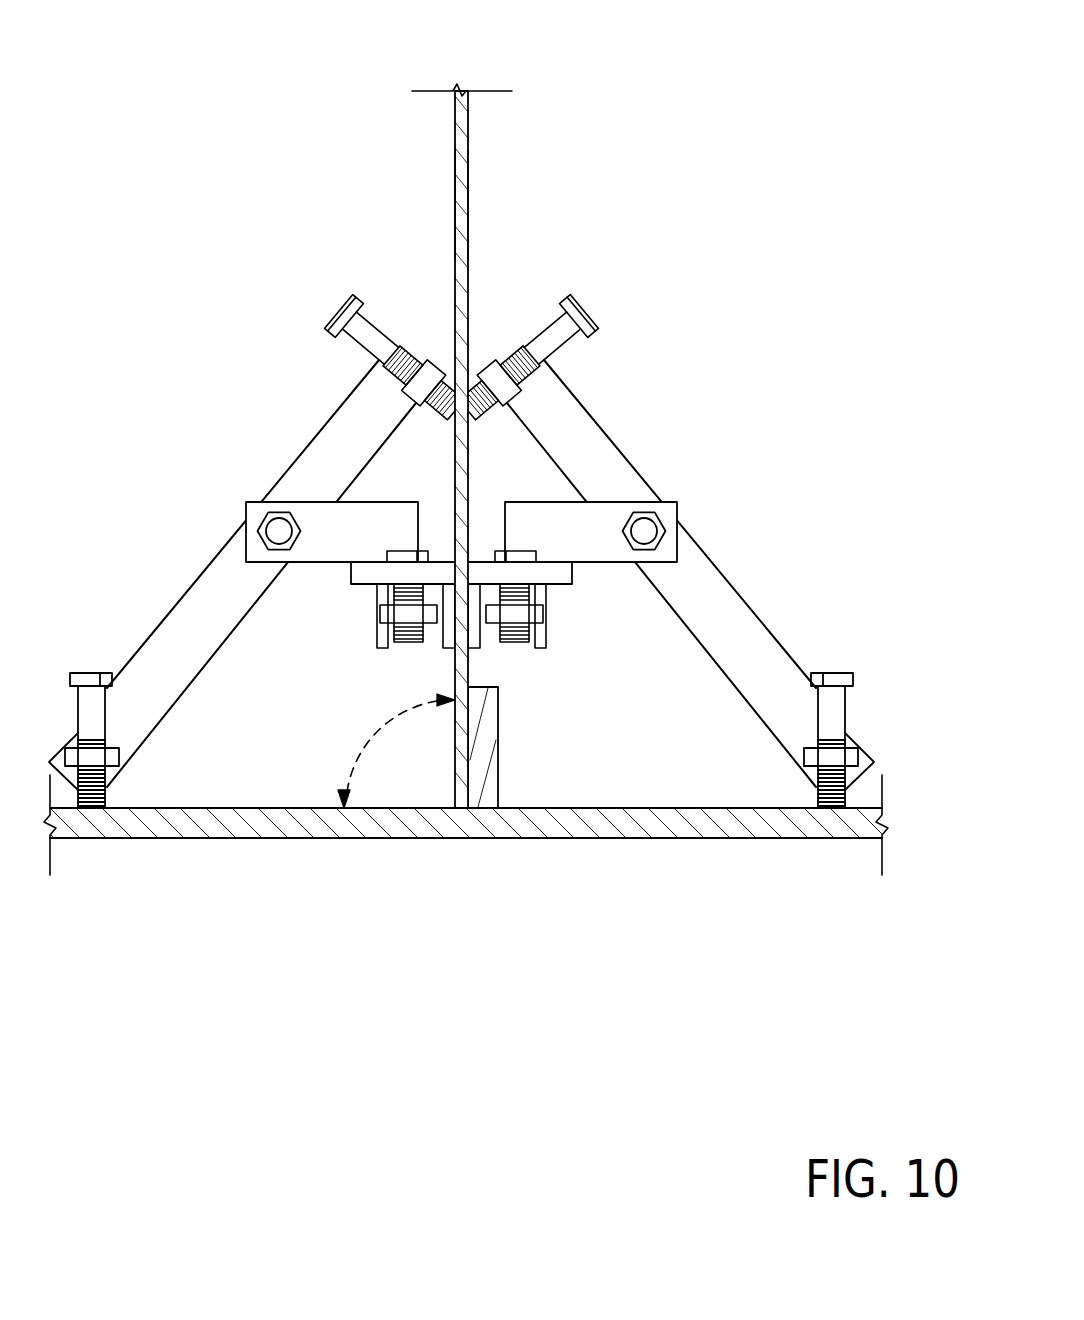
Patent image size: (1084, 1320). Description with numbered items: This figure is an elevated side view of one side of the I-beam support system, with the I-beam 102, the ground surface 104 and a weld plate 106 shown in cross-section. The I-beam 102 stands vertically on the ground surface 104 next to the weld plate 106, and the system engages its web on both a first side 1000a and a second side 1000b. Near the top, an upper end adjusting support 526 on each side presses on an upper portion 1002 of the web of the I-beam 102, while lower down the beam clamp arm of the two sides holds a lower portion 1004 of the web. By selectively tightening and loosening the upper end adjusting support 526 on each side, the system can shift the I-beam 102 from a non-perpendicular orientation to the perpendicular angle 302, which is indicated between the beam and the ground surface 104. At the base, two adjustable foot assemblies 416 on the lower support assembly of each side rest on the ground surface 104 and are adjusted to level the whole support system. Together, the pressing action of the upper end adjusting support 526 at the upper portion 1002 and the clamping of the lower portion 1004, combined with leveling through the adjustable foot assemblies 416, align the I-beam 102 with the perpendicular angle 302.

The I-beam 102 is at (469, 128).
The first side 1000a is at (469, 210).
The second side 1000b is at (455, 210).
The upper portion 1002 is at (456, 378).
The upper end adjusting support 526 is at (590, 314).
The lower portion 1004 is at (456, 566).
The adjustable foot assembly 416 is at (832, 673).
The weld plate 106 is at (498, 745).
The ground surface 104 is at (655, 808).
The perpendicular angle 302 is at (396, 751).